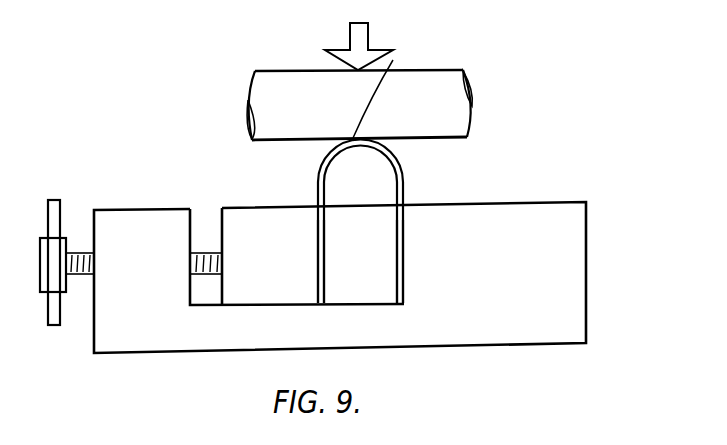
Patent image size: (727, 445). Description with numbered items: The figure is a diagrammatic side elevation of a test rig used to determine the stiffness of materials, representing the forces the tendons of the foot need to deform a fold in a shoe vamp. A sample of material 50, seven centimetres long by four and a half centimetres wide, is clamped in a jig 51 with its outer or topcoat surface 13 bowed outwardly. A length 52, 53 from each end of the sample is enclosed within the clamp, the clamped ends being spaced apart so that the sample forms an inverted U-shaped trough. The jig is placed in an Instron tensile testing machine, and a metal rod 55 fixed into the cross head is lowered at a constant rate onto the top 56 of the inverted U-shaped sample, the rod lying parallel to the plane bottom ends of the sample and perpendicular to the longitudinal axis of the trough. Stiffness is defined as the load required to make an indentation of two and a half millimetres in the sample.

The outer or topcoat surface 13 is at (318, 166).
The sample of material 50 is at (404, 180).
The jig 51 is at (587, 242).
The length enclosed within the clamp 52 is at (404, 240).
The length enclosed within the clamp 53 is at (318, 247).
The metal rod 55 is at (441, 70).
The top of the inverted U-shaped sample 56 is at (386, 89).